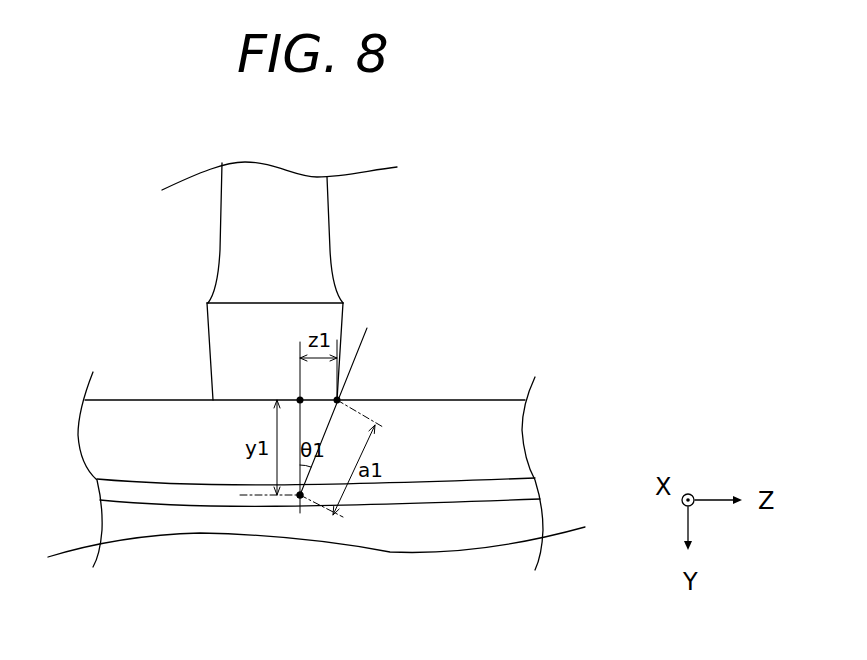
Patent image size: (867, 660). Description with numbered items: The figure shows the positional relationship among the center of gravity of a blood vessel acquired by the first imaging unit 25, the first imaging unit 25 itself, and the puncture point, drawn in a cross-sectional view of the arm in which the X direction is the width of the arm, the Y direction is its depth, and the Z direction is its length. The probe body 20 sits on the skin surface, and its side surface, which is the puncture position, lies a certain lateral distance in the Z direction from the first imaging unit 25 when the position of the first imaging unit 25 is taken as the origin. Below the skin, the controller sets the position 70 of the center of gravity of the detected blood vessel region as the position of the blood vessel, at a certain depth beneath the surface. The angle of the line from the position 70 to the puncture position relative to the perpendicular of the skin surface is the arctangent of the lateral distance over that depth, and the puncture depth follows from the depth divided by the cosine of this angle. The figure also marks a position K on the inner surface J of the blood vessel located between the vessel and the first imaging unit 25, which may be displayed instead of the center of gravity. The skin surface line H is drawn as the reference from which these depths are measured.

The probe body 20 is at (210, 290).
The first imaging unit 25 is at (300, 400).
The position of the center of gravity 70 is at (300, 497).
The hub surface H is at (472, 400).
The inner surface of the blood vessel J is at (320, 483).
The position in the inner surface of the blood vessel K is at (300, 495).